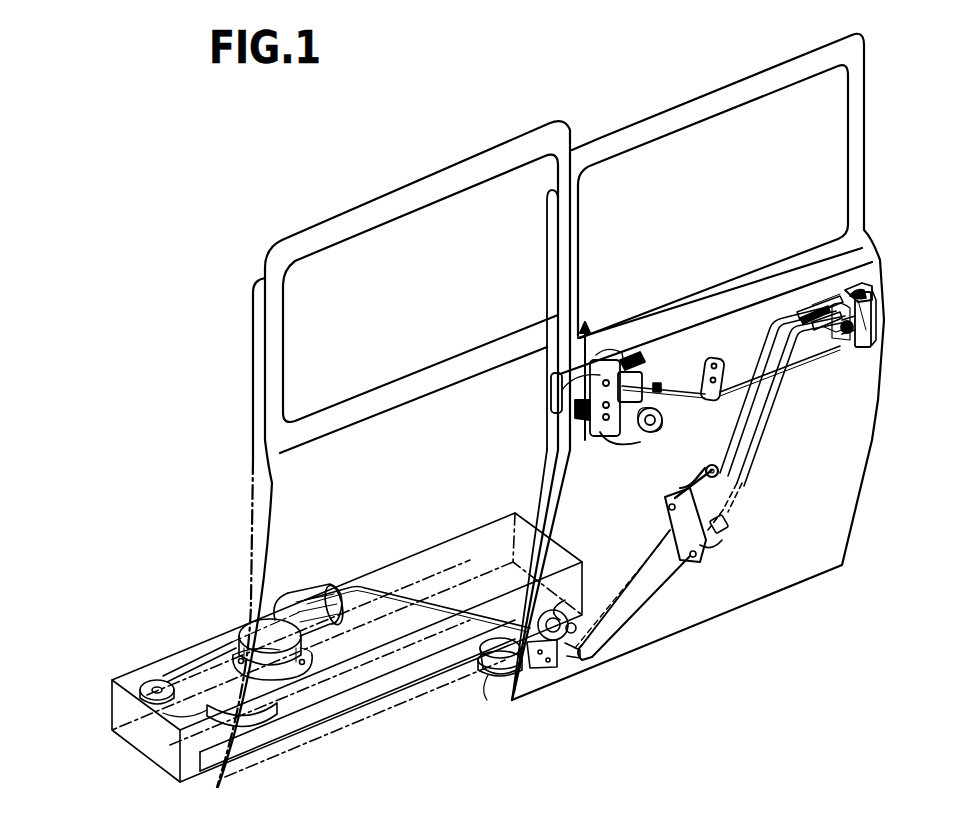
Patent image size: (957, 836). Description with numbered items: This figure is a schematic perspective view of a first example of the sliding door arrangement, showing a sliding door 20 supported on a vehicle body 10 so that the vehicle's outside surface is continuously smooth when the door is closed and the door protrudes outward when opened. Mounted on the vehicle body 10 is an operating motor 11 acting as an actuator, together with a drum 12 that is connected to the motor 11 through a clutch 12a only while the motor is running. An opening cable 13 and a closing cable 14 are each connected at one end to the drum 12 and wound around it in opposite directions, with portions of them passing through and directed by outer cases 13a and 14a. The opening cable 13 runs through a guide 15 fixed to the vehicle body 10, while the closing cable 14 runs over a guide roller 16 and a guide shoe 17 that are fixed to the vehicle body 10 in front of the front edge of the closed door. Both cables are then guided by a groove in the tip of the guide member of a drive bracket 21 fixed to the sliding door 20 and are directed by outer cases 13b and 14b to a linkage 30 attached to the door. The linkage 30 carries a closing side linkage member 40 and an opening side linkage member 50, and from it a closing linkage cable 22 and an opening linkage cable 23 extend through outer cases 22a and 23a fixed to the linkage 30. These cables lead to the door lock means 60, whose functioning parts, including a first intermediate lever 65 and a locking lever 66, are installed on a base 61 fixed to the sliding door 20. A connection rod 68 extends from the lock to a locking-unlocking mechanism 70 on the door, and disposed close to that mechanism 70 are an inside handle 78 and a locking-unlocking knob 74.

The vehicle body 10 is at (462, 533).
The operating motor 11 is at (307, 590).
The drum 12 is at (270, 625).
The clutch 12a is at (310, 667).
The opening cable 13 is at (500, 607).
The outer case 13a is at (417, 600).
The outer case 13b is at (642, 600).
The closing cable 14 is at (353, 690).
The outer case 14a is at (197, 653).
The outer case 14b is at (640, 563).
The guide 15 is at (573, 600).
The guide roller 16 is at (173, 687).
The guide shoe 17 is at (267, 702).
The sliding door 20 is at (606, 140).
The drive bracket 21 is at (500, 677).
The closing linkage cable 22 is at (827, 297).
The outer case 22a is at (740, 417).
The opening linkage cable 23 is at (730, 510).
The outer case 23a is at (753, 433).
The linkage 30 is at (723, 555).
The closing side linkage member 40 is at (680, 495).
The opening side linkage member 50 is at (720, 543).
The door lock means 60 is at (857, 362).
The base 61 is at (873, 337).
The first intermediate lever 65 is at (815, 335).
The locking lever 66 is at (855, 288).
The connection rod 68 is at (797, 362).
The locking-unlocking mechanism 70 is at (665, 368).
The locking-unlocking knob 74 is at (590, 318).
The inside handle 78 is at (555, 405).